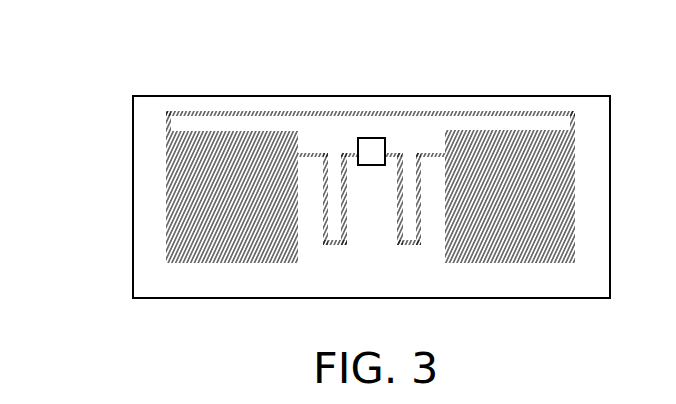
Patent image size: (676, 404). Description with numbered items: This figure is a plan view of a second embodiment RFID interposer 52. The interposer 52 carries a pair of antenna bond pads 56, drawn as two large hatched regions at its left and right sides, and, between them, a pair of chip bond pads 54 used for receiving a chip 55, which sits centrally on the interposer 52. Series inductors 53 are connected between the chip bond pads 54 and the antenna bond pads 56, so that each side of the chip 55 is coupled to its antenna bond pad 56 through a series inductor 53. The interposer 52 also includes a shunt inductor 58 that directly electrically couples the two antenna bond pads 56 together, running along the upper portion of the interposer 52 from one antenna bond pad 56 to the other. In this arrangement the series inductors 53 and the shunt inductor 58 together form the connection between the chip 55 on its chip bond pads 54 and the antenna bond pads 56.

The RFID interposer 52 is at (112, 88).
The series inductors 53 is at (333, 133).
The chip bond pads 54 is at (394, 152).
The chip 55 is at (372, 166).
The antenna bond pads 56 is at (238, 136).
The shunt inductor 58 is at (530, 113).